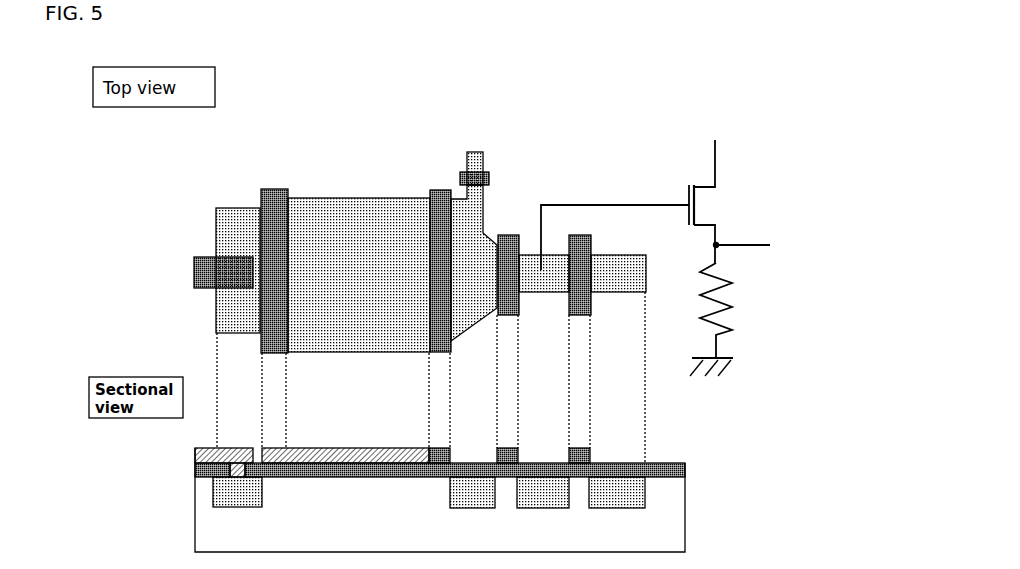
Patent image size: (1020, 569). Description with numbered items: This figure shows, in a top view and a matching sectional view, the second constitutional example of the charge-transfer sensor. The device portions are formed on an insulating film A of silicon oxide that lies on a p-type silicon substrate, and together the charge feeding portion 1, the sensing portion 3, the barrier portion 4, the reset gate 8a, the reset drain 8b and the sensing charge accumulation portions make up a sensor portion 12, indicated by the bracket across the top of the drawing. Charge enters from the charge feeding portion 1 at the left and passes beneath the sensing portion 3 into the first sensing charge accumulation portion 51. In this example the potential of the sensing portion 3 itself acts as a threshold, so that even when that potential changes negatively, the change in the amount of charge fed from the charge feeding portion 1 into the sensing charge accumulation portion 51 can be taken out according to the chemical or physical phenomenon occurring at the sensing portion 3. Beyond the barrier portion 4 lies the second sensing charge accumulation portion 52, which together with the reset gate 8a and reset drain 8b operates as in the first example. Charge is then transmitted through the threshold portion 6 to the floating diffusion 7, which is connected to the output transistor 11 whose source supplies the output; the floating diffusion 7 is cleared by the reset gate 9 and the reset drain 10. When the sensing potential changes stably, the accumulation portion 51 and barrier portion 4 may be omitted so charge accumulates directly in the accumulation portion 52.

The charge feeding portion 1 is at (202, 257).
The sensing portion 3 is at (277, 188).
The sensing charge accumulation portion 51 is at (350, 198).
The barrier portion 4 is at (440, 192).
The sensing charge accumulation portion 52 is at (485, 233).
The reset gate 8a is at (488, 178).
The reset drain 8b is at (483, 152).
The threshold portion 6 is at (502, 235).
The floating diffusion 7 is at (548, 257).
The reset gate 9 is at (585, 235).
The reset drain 10 is at (613, 257).
The output transistor 11 is at (697, 202).
The sensor portion 12 is at (587, 105).
The insulating film A is at (687, 463).